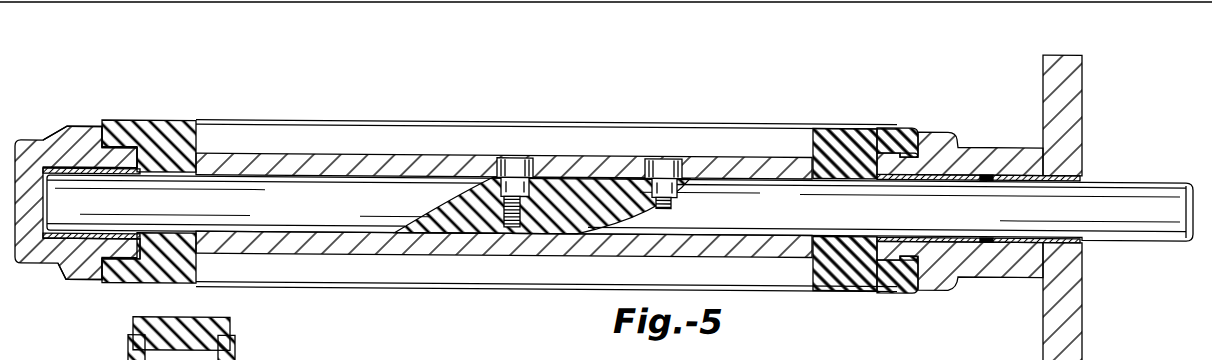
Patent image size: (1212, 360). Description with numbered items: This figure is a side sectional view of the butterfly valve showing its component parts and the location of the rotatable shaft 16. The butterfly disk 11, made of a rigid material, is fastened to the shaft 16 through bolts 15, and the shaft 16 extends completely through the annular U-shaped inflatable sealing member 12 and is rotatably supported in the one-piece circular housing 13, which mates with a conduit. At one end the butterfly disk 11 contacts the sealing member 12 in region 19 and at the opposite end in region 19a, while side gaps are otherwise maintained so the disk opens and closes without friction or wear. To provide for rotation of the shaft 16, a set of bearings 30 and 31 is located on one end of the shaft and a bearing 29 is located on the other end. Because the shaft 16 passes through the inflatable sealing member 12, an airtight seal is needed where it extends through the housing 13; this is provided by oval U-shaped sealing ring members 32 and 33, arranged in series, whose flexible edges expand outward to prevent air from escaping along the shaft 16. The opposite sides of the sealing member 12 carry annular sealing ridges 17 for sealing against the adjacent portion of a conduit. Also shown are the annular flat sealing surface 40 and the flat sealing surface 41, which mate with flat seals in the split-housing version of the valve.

The butterfly disk 11 is at (297, 157).
The annular U-shaped inflatable sealing member 12 is at (153, 124).
The circular housing 13 is at (232, 322).
The bolts 15 is at (510, 158).
The shaft 16 is at (1123, 176).
The annular sealing ridges 17 is at (910, 126).
The contact region 19 is at (815, 156).
The contact region 19a is at (200, 160).
The bearing 29 is at (68, 171).
The bearing 30 is at (928, 148).
The bearing 31 is at (1062, 168).
The U-shaped sealing ring member 32 is at (877, 150).
The U-shaped sealing ring member 33 is at (987, 171).
The annular flat sealing surface 40 is at (80, 127).
The flat sealing surface 41 is at (82, 284).